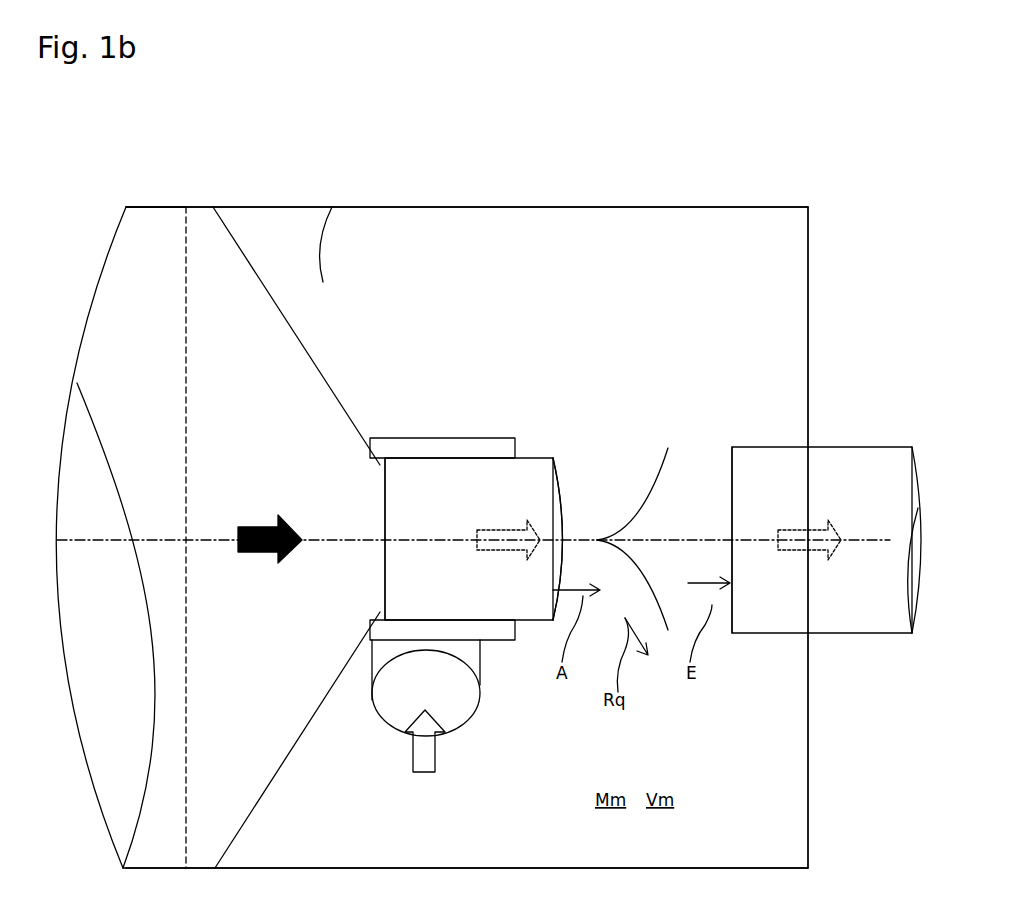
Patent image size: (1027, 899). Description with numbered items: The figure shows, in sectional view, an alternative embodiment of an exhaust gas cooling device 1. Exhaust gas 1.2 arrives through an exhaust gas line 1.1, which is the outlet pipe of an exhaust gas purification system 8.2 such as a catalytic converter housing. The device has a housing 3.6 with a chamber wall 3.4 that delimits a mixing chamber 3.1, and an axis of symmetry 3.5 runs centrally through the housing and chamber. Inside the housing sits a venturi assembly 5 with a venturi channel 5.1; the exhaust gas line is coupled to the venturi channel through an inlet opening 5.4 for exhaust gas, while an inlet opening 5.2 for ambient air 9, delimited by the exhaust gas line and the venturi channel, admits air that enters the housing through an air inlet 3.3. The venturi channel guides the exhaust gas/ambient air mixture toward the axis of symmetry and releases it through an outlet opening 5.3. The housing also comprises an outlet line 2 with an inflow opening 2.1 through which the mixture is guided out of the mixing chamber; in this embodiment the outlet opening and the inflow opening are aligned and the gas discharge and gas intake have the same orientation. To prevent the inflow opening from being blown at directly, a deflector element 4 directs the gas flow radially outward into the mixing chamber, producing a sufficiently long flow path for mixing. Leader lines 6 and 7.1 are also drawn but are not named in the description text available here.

The exhaust gas cooling device 1 is at (801, 154).
The exhaust gas line 1.1 is at (310, 358).
The exhaust gas 1.2 is at (250, 527).
The outlet line 2 is at (793, 635).
The inflow opening 2.1 is at (738, 468).
The mixing chamber 3.1 is at (467, 565).
The air inlet 3.3 is at (380, 716).
The chamber wall 3.4 is at (587, 207).
The axis of symmetry 3.5 is at (106, 540).
The housing 3.6 is at (383, 203).
The deflector element 4 is at (668, 448).
The venturi assembly 5 is at (412, 436).
The venturi channel 5.1 is at (472, 438).
The inlet opening for ambient air 5.2 is at (384, 467).
The outlet opening 5.3 is at (567, 477).
The inlet opening for exhaust gas 5.4 is at (384, 571).
The inlet screen 6 is at (186, 486).
The guide element 7.1 is at (325, 258).
The exhaust gas purification system 8.2 is at (152, 221).
The ambient air 9 is at (413, 770).